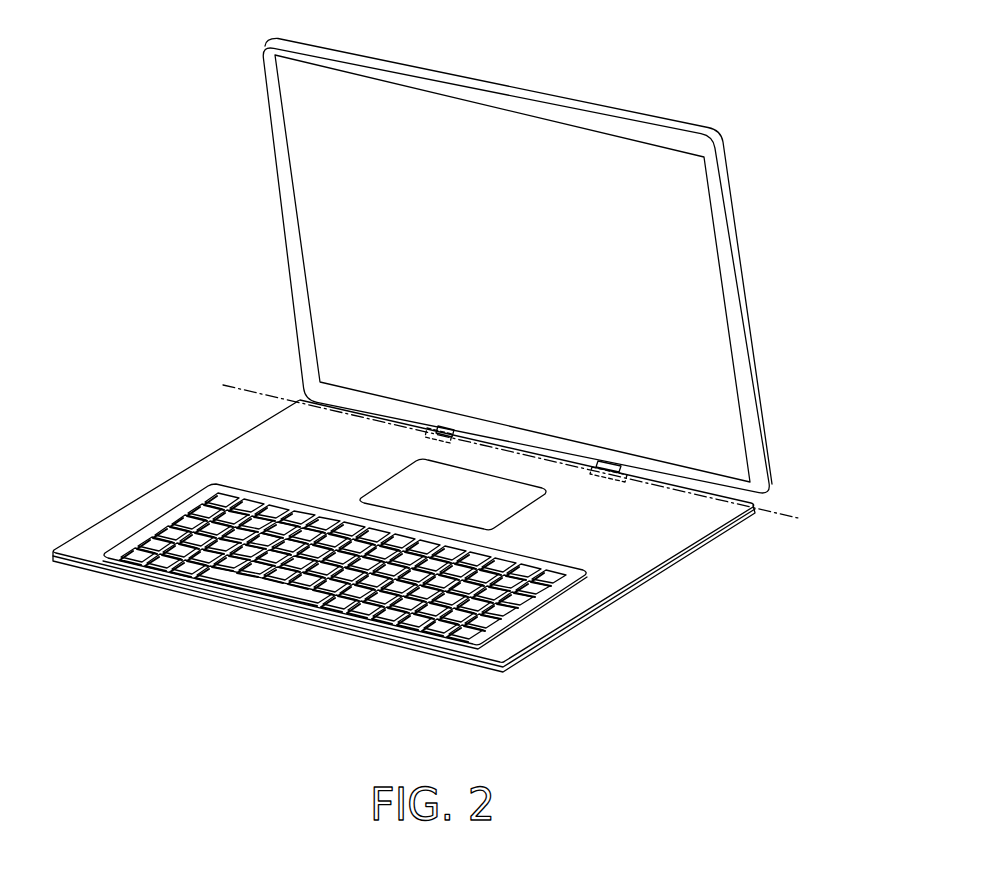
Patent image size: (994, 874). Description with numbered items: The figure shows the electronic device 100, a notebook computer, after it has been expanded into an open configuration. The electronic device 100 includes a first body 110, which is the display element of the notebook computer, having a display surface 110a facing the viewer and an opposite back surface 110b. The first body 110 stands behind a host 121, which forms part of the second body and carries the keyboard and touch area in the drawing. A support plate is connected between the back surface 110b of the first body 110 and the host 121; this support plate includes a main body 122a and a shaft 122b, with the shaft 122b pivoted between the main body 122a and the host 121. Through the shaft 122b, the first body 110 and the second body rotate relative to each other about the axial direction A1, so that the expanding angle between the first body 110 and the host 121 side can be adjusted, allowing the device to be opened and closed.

The electronic device 100 is at (442, 378).
The first body 110 is at (508, 265).
The display surface 110a is at (382, 258).
The back surface 110b is at (751, 256).
The host 121 is at (580, 618).
The main body 122a is at (447, 432).
The shaft 122b is at (577, 473).
The axial direction A1 is at (497, 444).